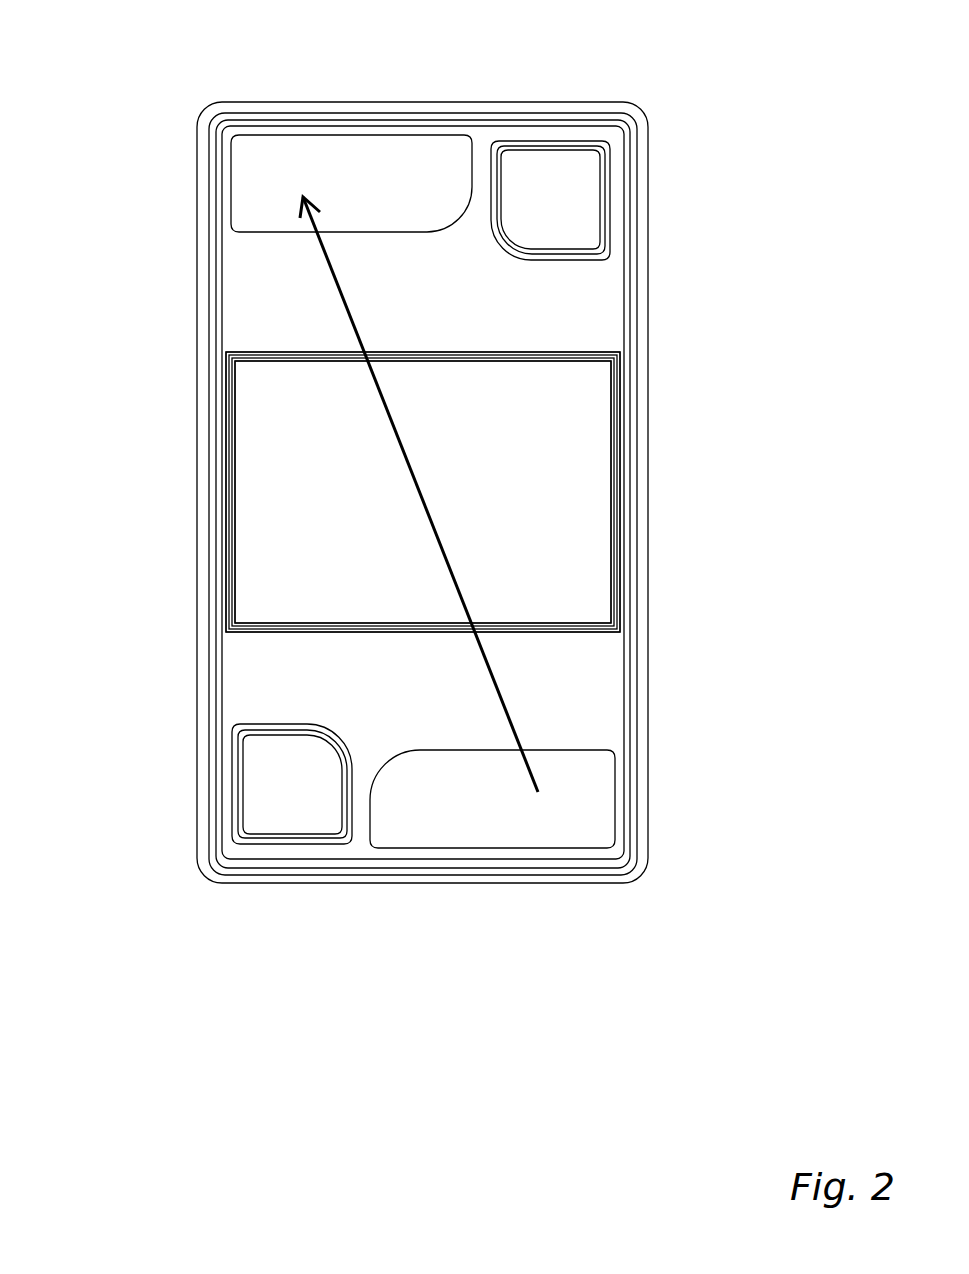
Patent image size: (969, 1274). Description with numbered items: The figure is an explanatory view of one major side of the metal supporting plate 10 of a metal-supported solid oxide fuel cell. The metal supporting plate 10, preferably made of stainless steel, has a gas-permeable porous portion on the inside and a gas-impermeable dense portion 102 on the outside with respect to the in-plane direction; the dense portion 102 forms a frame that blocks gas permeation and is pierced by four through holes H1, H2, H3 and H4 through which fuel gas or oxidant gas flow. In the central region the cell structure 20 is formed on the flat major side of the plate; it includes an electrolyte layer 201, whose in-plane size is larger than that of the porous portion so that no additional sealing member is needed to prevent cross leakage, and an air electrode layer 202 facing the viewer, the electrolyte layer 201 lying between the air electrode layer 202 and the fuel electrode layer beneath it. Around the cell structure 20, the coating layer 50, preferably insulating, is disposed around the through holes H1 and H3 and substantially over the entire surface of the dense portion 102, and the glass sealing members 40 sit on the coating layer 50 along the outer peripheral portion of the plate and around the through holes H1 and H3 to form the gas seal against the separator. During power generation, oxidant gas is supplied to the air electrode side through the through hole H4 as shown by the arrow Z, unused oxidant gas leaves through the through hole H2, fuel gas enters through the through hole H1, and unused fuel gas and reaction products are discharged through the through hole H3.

The metal supporting plate 10 is at (193, 677).
The dense portion 102 is at (228, 352).
The cell structure 20 is at (620, 375).
The electrolyte layer 201 is at (615, 455).
The air electrode layer 202 is at (600, 535).
The glass sealing member 40 is at (635, 134).
The coating layer 50 is at (613, 233).
The arrow Z is at (407, 470).
The through hole H1 is at (550, 173).
The through hole H2 is at (343, 160).
The through hole H3 is at (292, 823).
The through hole H4 is at (480, 822).